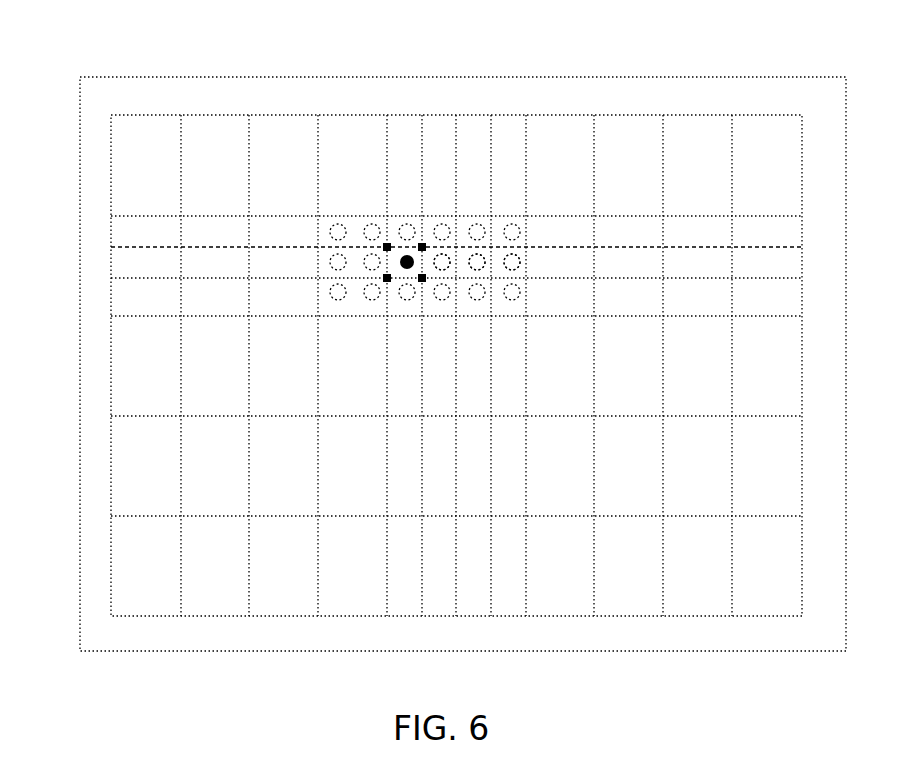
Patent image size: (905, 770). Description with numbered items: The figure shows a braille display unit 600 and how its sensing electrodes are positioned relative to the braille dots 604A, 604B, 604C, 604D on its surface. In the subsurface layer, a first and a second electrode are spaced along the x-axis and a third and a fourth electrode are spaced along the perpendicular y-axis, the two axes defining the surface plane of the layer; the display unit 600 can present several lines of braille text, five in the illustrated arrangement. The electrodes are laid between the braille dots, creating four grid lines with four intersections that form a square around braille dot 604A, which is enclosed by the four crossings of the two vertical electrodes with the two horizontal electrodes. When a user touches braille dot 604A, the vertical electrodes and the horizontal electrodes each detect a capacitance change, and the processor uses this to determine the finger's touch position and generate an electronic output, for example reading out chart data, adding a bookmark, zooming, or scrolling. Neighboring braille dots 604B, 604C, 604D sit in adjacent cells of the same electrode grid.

The braille display unit 600 is at (141, 57).
The braille dot 604A is at (405, 253).
The braille dot 604B is at (446, 253).
The braille dot 604C is at (472, 255).
The braille dot 604D is at (520, 258).